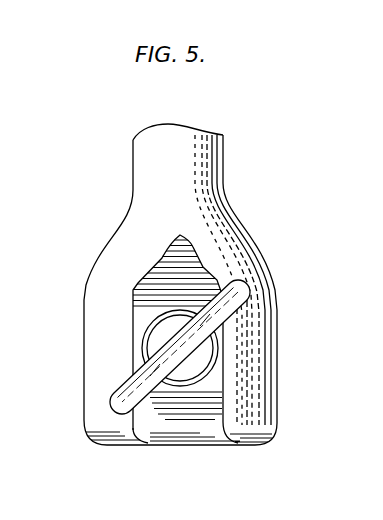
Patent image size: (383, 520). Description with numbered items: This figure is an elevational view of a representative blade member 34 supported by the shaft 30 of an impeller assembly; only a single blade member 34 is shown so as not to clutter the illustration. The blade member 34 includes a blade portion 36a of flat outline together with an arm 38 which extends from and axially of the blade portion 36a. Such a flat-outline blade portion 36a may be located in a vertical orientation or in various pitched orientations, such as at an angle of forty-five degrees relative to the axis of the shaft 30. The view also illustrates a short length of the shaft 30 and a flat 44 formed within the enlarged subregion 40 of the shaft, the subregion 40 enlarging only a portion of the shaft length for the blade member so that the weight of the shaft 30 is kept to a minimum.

The shaft 30 is at (203, 167).
The blade member 34 is at (133, 358).
The blade portion of flat outline 36a is at (247, 293).
The arm 38 is at (217, 367).
The single region 40 is at (260, 405).
The flat 44 is at (167, 443).